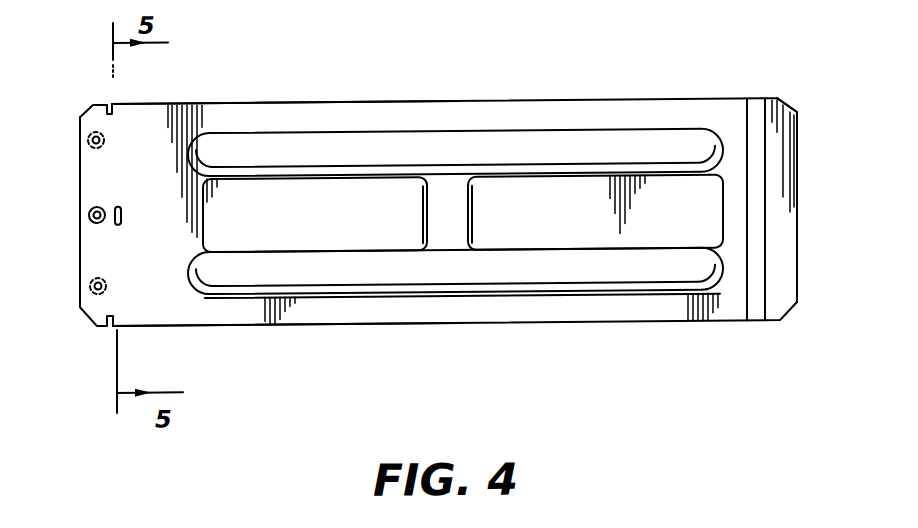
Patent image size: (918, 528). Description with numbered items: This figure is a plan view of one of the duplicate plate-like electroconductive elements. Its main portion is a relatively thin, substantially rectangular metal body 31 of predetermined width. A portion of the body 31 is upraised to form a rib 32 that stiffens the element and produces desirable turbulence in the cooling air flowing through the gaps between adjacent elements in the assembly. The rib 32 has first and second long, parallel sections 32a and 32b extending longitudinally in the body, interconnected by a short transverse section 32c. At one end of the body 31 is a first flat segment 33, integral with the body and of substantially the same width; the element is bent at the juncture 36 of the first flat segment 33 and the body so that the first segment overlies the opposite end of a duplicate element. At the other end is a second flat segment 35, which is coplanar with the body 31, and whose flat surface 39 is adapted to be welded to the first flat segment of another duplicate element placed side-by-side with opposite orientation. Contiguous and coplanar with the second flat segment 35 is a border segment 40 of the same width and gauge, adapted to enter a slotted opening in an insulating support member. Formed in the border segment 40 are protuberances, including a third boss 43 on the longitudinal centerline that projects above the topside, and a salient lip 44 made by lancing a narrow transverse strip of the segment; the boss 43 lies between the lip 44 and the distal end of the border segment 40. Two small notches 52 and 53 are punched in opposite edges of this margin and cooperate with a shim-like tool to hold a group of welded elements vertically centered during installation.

The plate-like metal body 31 is at (408, 322).
The rib 32 is at (352, 142).
The first long section of rib 32a is at (590, 129).
The second long section of rib 32b is at (603, 296).
The transverse section of rib 32c is at (475, 219).
The first flat segment 33 is at (787, 110).
The second flat segment 35 is at (148, 99).
The juncture 36 is at (757, 323).
The flat surface of second segment 39 is at (158, 287).
The border segment 40 is at (90, 105).
The third boss 43 is at (88, 213).
The salient lip 44 is at (122, 209).
The notch 52 is at (112, 328).
The notch 53 is at (108, 98).